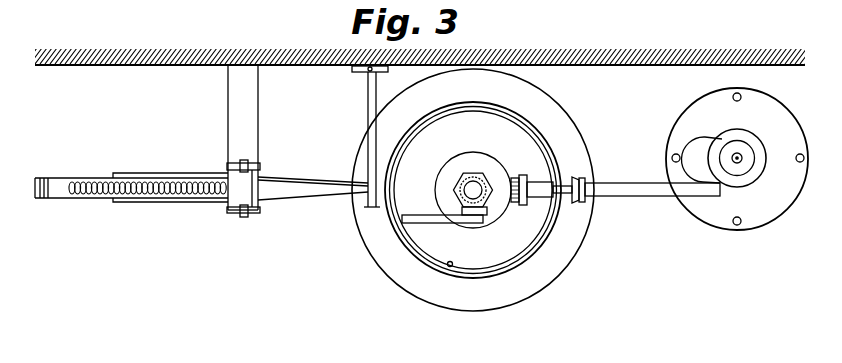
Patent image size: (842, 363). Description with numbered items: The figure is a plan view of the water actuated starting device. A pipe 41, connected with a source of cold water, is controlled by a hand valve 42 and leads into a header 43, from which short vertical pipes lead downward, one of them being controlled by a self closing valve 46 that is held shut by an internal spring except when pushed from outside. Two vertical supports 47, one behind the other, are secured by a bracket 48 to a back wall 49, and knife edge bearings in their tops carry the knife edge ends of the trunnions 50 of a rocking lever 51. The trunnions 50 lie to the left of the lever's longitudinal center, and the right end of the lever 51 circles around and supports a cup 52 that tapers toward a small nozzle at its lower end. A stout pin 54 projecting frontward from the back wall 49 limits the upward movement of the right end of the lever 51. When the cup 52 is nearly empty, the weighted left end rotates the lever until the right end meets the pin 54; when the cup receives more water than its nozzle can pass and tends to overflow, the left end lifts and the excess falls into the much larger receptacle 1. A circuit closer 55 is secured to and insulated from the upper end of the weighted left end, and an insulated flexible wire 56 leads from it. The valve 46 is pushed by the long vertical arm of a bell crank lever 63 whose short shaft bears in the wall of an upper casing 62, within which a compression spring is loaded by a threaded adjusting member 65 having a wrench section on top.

The receptacle 1 is at (558, 268).
The pipe 41 is at (490, 176).
The hand valve 42 is at (425, 224).
The header 43 is at (479, 160).
The self closing valve 46 is at (532, 198).
The vertical supports 47 is at (236, 164).
The bracket 48 is at (238, 100).
The back wall 49 is at (172, 63).
The trunnions 50 is at (245, 161).
The rocking lever 51 is at (305, 198).
The cup 52 is at (449, 267).
The pin 54 is at (369, 97).
The circuit closer 55 is at (55, 190).
The insulated flexible wire 56 is at (160, 193).
The upper casing 62 is at (750, 178).
The bell crank lever 63 is at (622, 189).
The adjusting member 65 is at (695, 118).